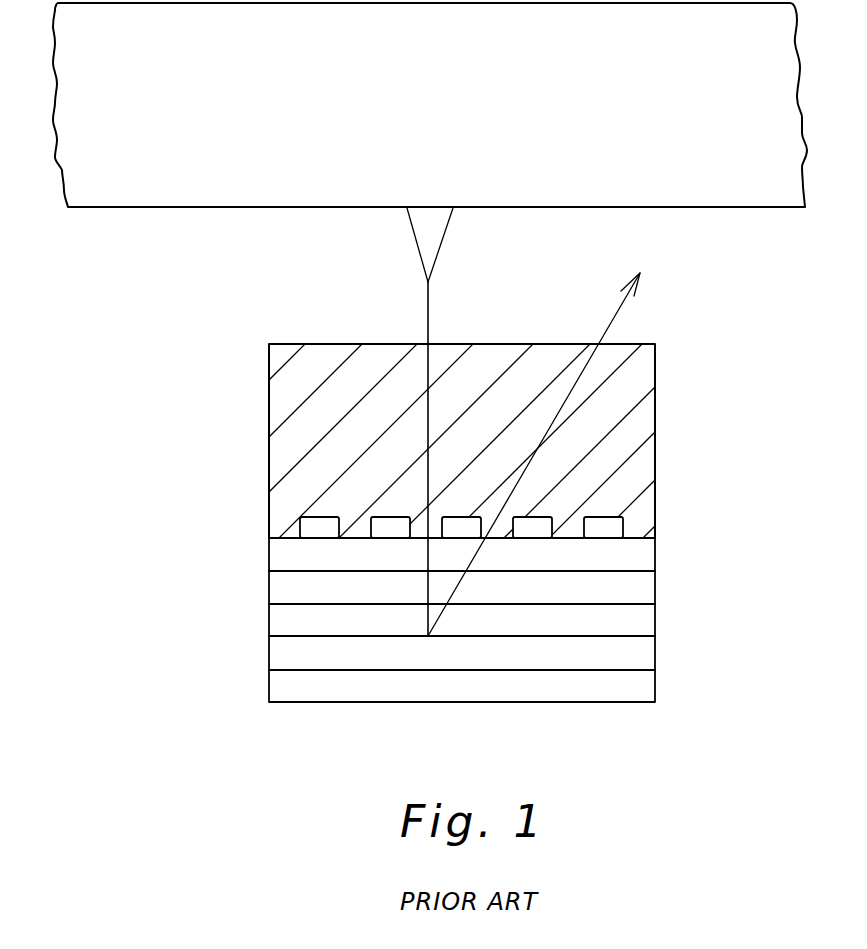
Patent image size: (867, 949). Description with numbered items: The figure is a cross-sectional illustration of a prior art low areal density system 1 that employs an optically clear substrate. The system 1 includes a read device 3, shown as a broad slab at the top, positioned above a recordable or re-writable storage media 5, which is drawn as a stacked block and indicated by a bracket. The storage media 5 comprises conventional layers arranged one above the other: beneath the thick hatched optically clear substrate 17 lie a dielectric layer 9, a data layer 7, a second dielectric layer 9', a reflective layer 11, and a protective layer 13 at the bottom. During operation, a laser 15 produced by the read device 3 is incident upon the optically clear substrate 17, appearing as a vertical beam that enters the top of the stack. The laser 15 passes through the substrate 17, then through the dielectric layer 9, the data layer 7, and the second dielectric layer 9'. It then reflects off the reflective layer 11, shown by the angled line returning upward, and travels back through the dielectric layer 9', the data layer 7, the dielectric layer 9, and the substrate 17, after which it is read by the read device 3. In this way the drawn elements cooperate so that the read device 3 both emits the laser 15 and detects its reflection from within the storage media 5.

The low areal density system 1 is at (141, 576).
The read device 3 is at (447, 115).
The storage media 5 is at (673, 343).
The data layer 7 is at (275, 586).
The dielectric layer 9 is at (431, 554).
The second dielectric layer 9' is at (430, 625).
The reflective layer 11 is at (280, 655).
The protective layer 13 is at (276, 693).
The laser 15 is at (428, 300).
The optically clear substrate 17 is at (270, 432).